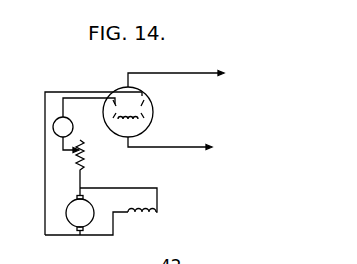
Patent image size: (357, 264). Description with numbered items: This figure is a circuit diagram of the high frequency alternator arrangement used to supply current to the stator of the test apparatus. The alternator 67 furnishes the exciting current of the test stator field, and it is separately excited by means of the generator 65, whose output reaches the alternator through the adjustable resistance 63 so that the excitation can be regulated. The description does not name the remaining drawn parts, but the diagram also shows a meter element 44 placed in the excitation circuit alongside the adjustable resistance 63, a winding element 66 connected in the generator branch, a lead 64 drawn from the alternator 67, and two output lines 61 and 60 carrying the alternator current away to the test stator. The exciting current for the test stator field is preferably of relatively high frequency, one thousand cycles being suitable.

The ammeter 44 is at (73, 128).
The output line 60 is at (177, 149).
The output line 61 is at (177, 76).
The adjustable resistance 63 is at (86, 160).
The alternator output lead 64 is at (132, 114).
The generator 65 is at (68, 206).
The field coil 66 is at (138, 218).
The alternator 67 is at (122, 91).